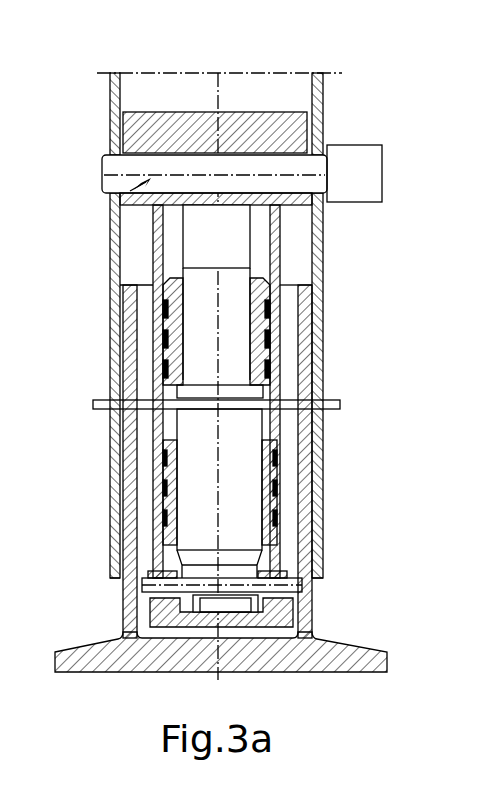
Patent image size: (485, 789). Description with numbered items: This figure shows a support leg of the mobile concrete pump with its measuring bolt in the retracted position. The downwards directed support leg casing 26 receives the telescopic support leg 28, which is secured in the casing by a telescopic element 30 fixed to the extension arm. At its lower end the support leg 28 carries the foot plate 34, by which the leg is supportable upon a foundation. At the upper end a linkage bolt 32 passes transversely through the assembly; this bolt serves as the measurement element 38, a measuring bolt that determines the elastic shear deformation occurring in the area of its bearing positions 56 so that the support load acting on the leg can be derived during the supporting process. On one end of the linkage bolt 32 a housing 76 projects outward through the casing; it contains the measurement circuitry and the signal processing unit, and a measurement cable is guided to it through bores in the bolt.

The support leg casing 26 is at (323, 243).
The telescopic support leg 28 is at (222, 495).
The telescopic element 30 is at (322, 107).
The linkage bolt 32 is at (100, 157).
The foot plate 34 is at (340, 653).
The measurement element 38 is at (112, 207).
The bearing position 56 is at (109, 150).
The housing 76 is at (370, 190).